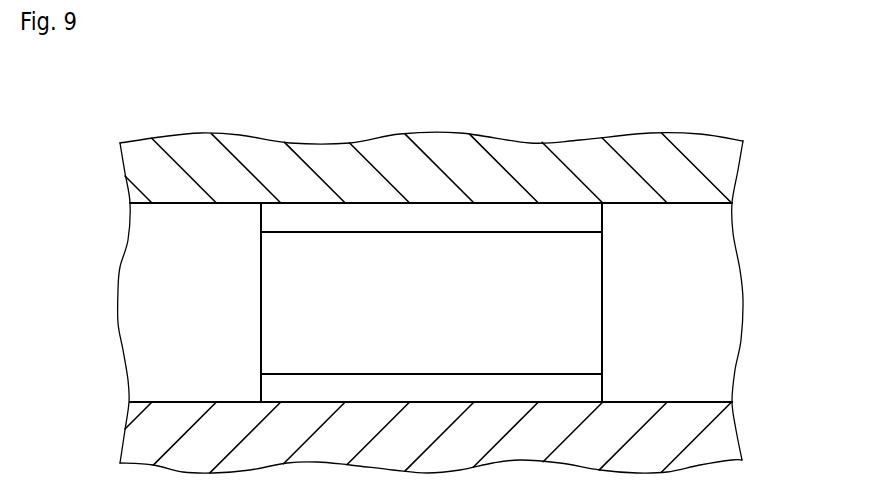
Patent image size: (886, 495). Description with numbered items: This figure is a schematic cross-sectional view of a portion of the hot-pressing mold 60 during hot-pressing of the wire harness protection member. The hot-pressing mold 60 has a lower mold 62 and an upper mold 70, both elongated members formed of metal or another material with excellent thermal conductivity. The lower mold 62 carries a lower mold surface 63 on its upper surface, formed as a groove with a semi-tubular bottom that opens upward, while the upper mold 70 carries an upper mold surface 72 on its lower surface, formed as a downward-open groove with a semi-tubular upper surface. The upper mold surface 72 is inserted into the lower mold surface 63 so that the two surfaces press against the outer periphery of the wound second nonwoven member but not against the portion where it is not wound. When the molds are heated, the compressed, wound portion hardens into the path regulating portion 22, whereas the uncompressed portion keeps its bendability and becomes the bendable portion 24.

The hot-pressing mold 60 is at (389, 128).
The path regulating portion 22 is at (242, 203).
The bendable portion 24 is at (472, 232).
The upper mold 70 is at (728, 175).
The upper mold surface 72 is at (700, 204).
The lower mold surface 63 is at (700, 402).
The lower mold 62 is at (725, 437).